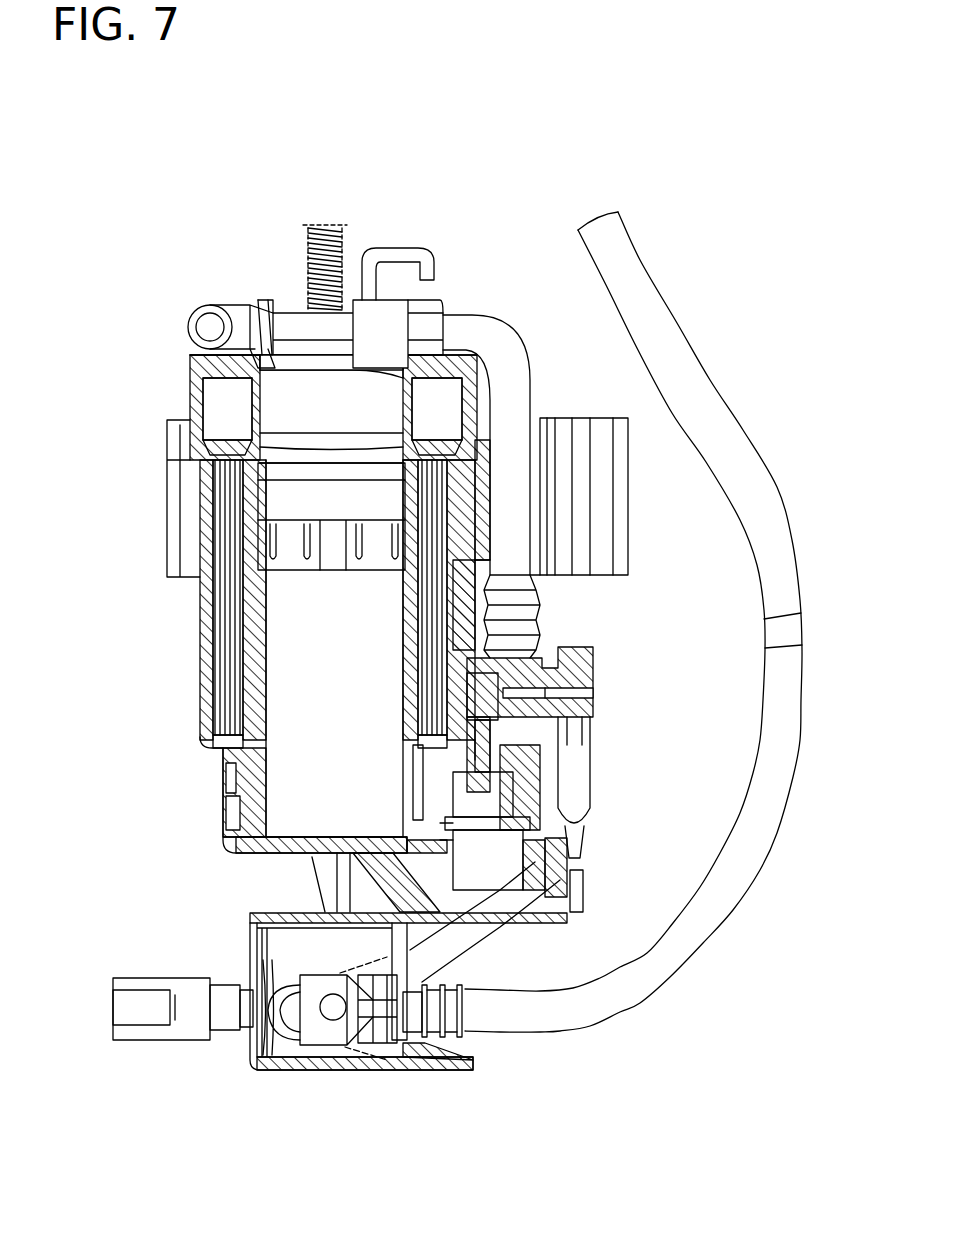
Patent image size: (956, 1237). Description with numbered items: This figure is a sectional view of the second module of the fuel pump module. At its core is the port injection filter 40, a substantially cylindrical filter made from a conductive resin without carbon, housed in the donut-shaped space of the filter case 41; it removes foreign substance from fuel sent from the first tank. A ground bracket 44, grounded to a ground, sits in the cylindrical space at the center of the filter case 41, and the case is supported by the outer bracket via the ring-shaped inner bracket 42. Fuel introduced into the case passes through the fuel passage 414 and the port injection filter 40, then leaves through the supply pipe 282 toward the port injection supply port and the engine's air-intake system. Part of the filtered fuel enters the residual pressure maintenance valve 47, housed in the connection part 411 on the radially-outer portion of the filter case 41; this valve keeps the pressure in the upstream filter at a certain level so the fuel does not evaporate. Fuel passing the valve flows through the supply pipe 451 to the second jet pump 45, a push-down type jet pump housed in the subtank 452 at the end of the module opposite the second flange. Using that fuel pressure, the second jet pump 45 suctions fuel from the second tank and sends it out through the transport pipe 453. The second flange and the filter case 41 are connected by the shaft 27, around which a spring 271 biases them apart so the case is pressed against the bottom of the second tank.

The shaft 27 is at (305, 240).
The spring 271 is at (300, 264).
The supply pipe 282 is at (489, 325).
The fuel passage 414 is at (215, 405).
The inner bracket 42 is at (597, 504).
The port injection filter 40 is at (227, 621).
The connection part 411 is at (594, 672).
The filter case 41 is at (197, 693).
The transport pipe 453 is at (778, 738).
The ground bracket 44 is at (238, 822).
The residual pressure maintenance valve 47 is at (580, 880).
The supply pipe 451 is at (455, 950).
The second jet pump 45 is at (315, 1023).
The subtank 452 is at (412, 1062).